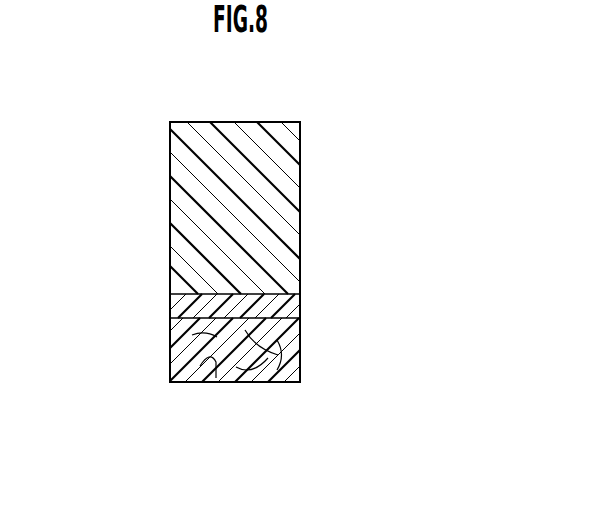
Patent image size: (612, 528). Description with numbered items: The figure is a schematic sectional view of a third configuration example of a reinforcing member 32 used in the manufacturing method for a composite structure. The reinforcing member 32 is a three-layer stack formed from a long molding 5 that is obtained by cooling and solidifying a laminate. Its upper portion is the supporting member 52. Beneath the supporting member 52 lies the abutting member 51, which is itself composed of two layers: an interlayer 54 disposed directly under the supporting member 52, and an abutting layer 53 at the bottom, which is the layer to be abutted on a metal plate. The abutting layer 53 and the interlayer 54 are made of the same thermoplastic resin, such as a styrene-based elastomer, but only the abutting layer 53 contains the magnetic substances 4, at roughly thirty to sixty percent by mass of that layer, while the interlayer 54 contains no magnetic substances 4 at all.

The reinforcing member 32 is at (138, 146).
The long molding 5 is at (408, 192).
The abutting member 51 is at (365, 285).
The supporting member 52 is at (300, 203).
The abutting layer 53 is at (300, 350).
The interlayer 54 is at (300, 305).
The magnetic substances 4 is at (213, 358).